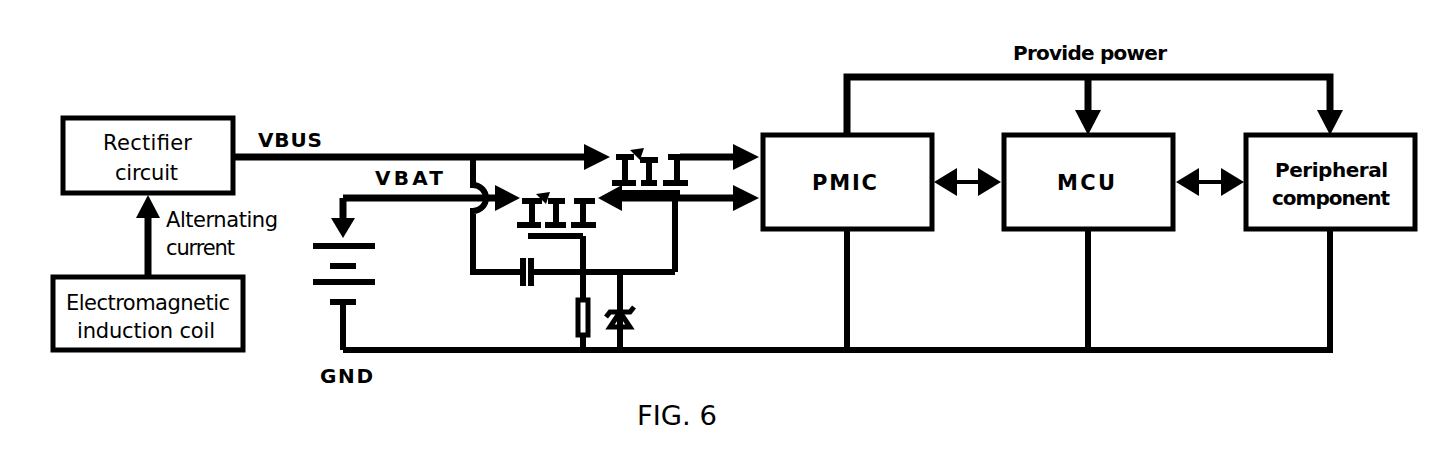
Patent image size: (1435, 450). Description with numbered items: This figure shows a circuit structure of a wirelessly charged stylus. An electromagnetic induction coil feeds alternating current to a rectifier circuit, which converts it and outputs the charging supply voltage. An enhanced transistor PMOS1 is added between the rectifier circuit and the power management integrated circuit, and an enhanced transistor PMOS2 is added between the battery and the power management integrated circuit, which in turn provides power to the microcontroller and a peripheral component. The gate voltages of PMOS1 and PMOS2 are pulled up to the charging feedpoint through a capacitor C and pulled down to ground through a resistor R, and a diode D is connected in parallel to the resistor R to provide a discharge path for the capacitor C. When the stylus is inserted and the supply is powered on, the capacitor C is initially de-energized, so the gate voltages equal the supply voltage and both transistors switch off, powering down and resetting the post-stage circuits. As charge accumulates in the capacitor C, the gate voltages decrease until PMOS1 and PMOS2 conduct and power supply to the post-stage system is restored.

The enhanced PMOS transistor between rectifier circuit and PMIC PMOS1 is at (651, 158).
The enhanced PMOS transistor between battery and PMIC PMOS2 is at (554, 236).
The capacitor C is at (521, 286).
The resistor R is at (567, 325).
The diode D is at (632, 311).